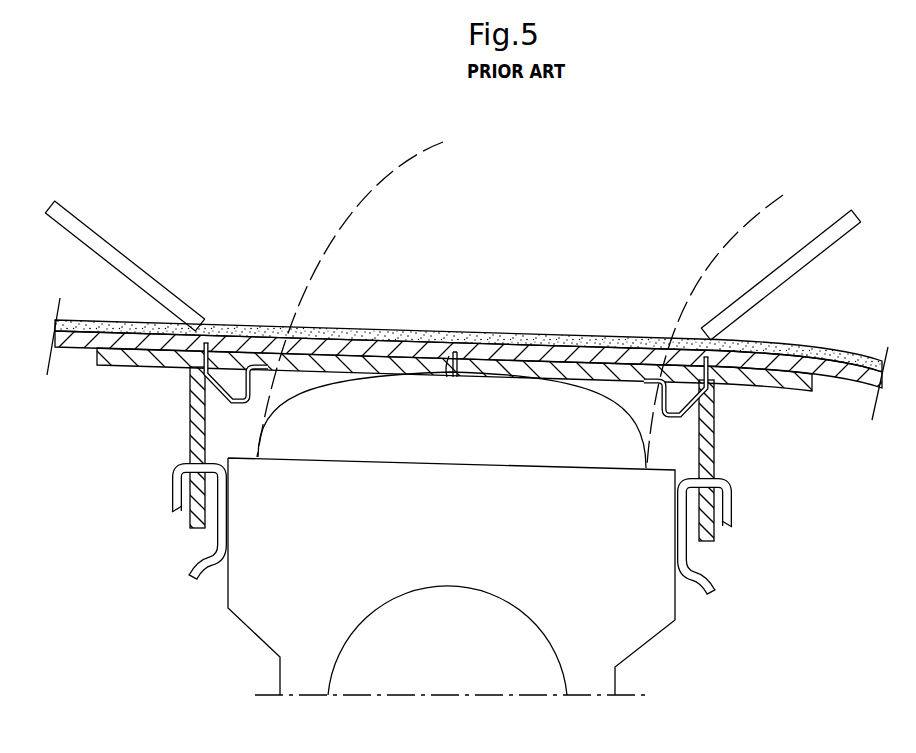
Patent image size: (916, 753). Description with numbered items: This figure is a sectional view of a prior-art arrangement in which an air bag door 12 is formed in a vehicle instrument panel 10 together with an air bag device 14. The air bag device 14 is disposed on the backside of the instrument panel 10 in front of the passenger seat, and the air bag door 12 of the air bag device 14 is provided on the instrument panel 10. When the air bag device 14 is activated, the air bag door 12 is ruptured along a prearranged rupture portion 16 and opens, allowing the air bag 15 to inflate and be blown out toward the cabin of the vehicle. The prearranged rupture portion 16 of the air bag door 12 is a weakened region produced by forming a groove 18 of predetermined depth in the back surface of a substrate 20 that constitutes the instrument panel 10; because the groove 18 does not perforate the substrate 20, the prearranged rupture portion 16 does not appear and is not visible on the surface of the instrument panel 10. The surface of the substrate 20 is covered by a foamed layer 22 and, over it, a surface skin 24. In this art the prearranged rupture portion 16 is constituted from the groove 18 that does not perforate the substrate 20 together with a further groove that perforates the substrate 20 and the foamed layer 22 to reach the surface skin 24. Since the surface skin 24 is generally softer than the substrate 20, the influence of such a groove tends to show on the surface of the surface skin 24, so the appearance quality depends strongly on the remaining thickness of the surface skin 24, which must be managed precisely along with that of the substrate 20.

The instrument panel 10 is at (458, 378).
The air bag door 12 is at (110, 240).
The air bag device 14 is at (670, 642).
The air bag 15 is at (377, 180).
The prearranged rupture portion 16 is at (449, 362).
The groove 18 is at (222, 338).
The substrate 20 is at (328, 360).
The foamed layer 22 is at (378, 331).
The surface skin 24 is at (408, 338).